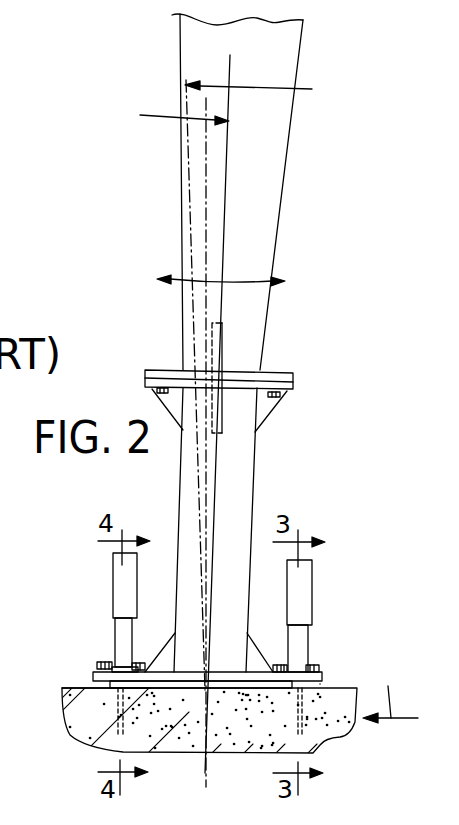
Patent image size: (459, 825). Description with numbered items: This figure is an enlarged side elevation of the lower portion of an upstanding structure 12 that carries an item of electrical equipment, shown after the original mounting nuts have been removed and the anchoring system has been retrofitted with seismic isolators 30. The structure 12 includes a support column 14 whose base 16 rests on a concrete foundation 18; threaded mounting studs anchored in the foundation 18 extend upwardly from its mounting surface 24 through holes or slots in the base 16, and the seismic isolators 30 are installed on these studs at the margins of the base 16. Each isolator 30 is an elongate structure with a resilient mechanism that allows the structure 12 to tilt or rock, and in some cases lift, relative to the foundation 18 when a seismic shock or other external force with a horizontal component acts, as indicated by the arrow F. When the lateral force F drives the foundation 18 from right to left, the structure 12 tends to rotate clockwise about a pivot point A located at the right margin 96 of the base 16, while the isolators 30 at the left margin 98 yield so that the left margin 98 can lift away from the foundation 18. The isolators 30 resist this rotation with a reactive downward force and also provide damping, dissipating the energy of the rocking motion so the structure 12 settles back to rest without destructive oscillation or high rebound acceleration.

The upstanding structure 12 is at (290, 238).
The support column 14 is at (180, 503).
The base 16 is at (163, 675).
The concrete foundation 18 is at (72, 710).
The mounting surface 24 is at (66, 689).
The seismic isolators 30 is at (113, 572).
The right margin 96 is at (320, 681).
The left margin 98 is at (95, 674).
The pivot point A is at (320, 684).
The lateral seismic force F is at (390, 691).